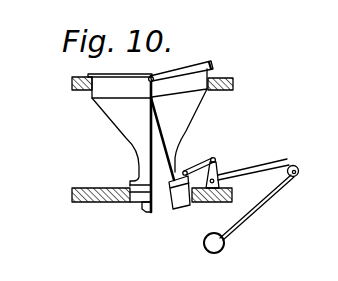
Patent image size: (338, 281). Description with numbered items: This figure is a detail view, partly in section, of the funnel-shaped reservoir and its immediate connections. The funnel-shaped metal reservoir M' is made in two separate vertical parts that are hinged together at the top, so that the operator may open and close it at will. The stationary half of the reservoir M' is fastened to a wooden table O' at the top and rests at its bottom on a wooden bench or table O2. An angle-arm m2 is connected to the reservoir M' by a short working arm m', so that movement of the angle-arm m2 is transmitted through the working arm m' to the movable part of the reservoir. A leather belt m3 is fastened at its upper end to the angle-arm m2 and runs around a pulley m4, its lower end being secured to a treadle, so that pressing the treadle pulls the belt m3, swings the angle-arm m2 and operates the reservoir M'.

The wooden table O' is at (136, 86).
The wooden bench or table O2 is at (136, 194).
The funnel-shaped metal reservoir M' is at (147, 136).
The short working arm m' is at (199, 160).
The angle-arm m2 is at (252, 166).
The leather belt m3 is at (257, 207).
The pulley m4 is at (204, 243).